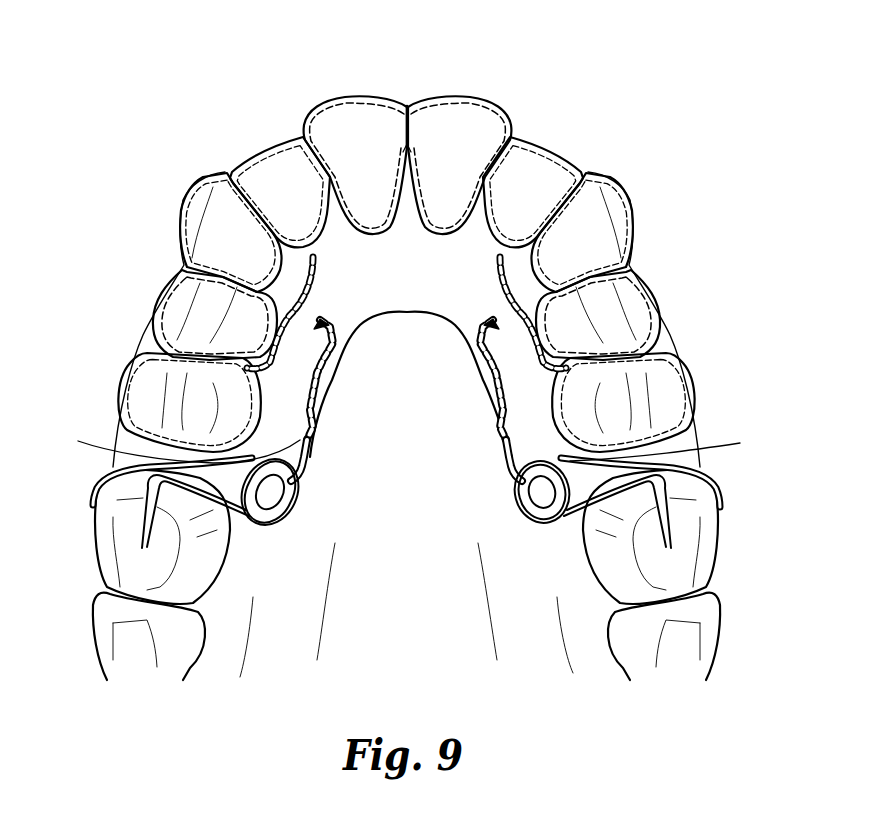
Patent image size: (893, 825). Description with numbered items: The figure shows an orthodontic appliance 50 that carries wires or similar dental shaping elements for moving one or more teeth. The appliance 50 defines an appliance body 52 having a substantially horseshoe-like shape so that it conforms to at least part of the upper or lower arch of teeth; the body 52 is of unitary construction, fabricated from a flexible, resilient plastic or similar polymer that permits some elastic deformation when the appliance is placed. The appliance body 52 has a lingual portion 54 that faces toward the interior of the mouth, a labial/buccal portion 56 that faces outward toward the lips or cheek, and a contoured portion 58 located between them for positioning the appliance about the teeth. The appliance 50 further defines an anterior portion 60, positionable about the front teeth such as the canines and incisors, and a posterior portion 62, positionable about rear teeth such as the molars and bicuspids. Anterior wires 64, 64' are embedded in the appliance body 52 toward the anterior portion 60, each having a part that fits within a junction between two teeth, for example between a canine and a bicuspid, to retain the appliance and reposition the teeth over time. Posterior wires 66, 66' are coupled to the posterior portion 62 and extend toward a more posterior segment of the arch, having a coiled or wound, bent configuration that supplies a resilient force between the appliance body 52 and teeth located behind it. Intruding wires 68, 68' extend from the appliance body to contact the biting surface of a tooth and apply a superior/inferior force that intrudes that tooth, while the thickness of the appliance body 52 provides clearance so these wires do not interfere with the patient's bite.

The orthodontic appliance 50 is at (655, 260).
The appliance body 52 is at (410, 300).
The lingual portion 54 is at (337, 370).
The labial/buccal portion 56 is at (176, 266).
The contoured portion 58 is at (613, 323).
The anterior portion 60 is at (407, 106).
The posterior portion 62 is at (242, 524).
The anterior wire 64 is at (321, 312).
The anterior wire 64' is at (494, 312).
The posterior wire 66 is at (310, 499).
The posterior wire 66' is at (504, 498).
The intruding wire 68 is at (186, 412).
The intruding wire 68' is at (629, 413).